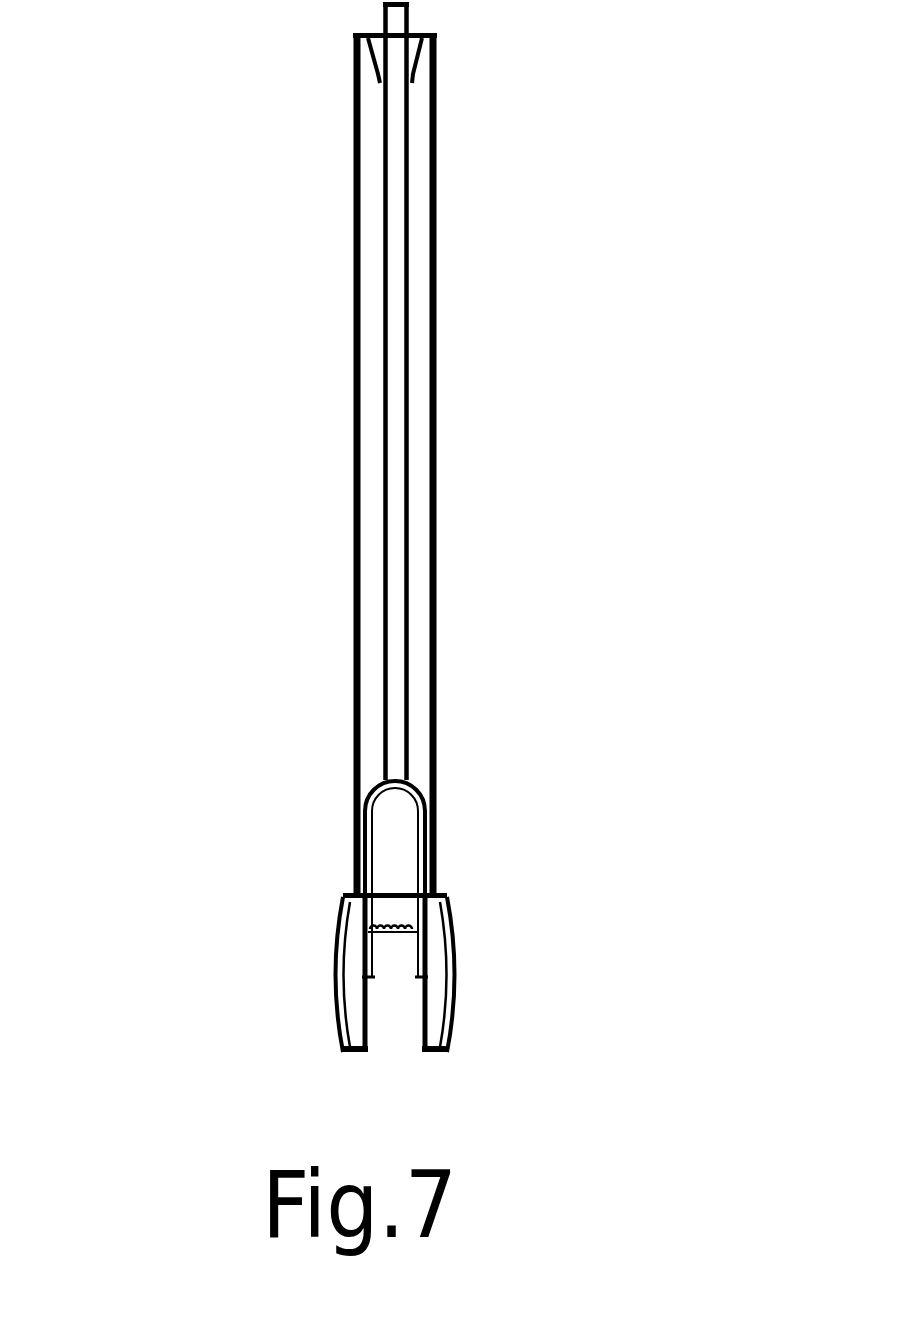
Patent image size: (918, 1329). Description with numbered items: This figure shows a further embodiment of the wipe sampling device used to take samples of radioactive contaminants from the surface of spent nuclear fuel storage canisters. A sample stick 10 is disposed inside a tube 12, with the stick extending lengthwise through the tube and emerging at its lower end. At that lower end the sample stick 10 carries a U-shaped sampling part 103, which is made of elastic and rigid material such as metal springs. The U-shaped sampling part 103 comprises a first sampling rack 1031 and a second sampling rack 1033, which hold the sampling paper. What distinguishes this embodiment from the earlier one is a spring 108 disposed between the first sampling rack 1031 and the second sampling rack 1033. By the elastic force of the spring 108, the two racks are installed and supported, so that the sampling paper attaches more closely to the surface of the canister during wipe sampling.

The sample stick 10 is at (368, 307).
The tube 12 is at (437, 127).
The U-shaped sampling part 103 is at (430, 783).
The first sampling rack 1031 is at (360, 870).
The second sampling rack 1033 is at (482, 873).
The spring 108 is at (367, 920).